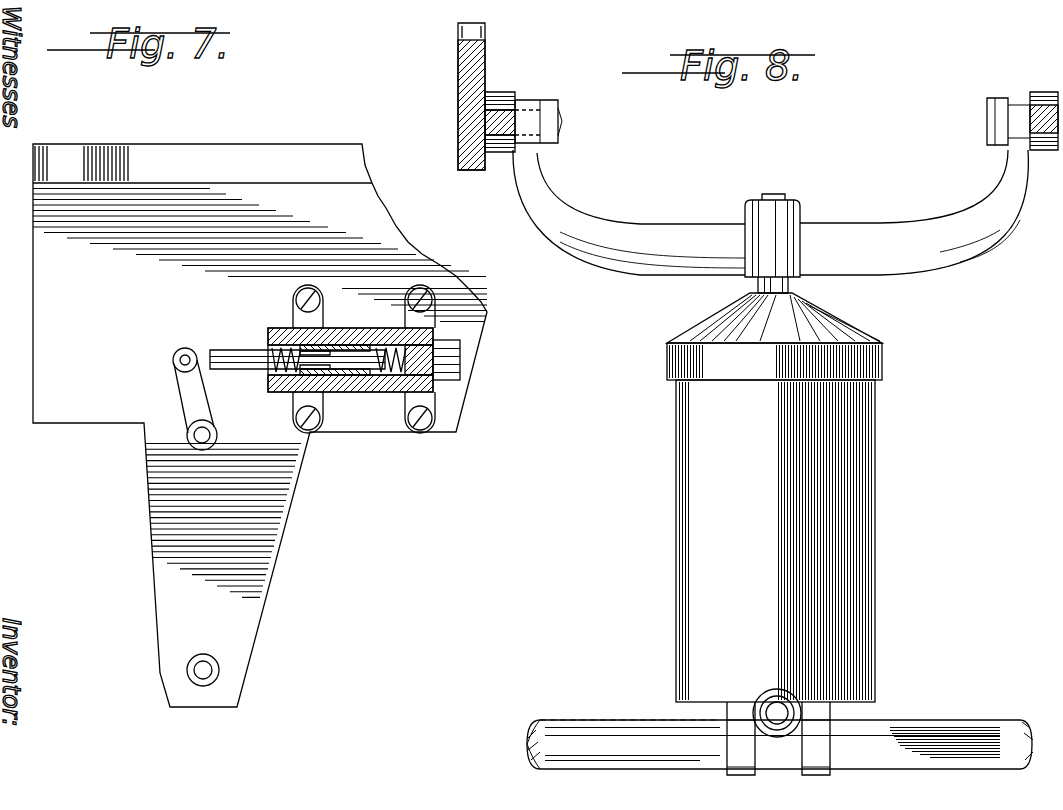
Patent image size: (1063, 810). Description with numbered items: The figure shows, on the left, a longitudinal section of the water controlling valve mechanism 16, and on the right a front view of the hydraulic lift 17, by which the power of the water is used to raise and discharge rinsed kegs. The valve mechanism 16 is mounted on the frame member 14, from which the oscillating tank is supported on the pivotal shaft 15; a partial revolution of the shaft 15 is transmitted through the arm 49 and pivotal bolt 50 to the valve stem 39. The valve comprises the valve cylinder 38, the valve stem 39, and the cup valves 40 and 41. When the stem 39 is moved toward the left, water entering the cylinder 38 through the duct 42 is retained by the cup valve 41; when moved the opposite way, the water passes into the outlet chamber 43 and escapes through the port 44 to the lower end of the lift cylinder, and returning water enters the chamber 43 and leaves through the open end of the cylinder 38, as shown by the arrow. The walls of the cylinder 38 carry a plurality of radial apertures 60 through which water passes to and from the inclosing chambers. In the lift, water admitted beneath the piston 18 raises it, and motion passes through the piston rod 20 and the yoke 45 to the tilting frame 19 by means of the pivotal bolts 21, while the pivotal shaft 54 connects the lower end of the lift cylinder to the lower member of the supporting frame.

In FIG. 7, the frame member 14 is at (260, 425).
In FIG. 7, the pivotal shaft 15 is at (195, 439).
In FIG. 7, the water controlling valve mechanism 16 is at (357, 330).
In FIG. 7, the valve cylinder 38 is at (445, 347).
In FIG. 7, the valve stem 39 is at (234, 358).
In FIG. 7, the cup valve 40 is at (305, 378).
In FIG. 7, the cup valve 41 is at (381, 342).
In FIG. 7, the duct 42 is at (345, 340).
In FIG. 7, the outlet chamber 43 is at (432, 388).
In FIG. 7, the port 44 is at (450, 360).
In FIG. 7, the arm 49 is at (178, 393).
In FIG. 7, the pivotal bolt 50 is at (180, 359).
In FIG. 7, the radial apertures 60 is at (338, 386).
In FIG. 8, the hydraulic lift 17 is at (774, 497).
In FIG. 8, the piston 18 is at (693, 702).
In FIG. 8, the tilting frame 19 is at (485, 88).
In FIG. 8, the piston rod 20 is at (800, 289).
In FIG. 8, the pivotal bolts 21 is at (560, 120).
In FIG. 8, the yoke 45 is at (907, 228).
In FIG. 8, the pivotal shaft 54 is at (925, 718).